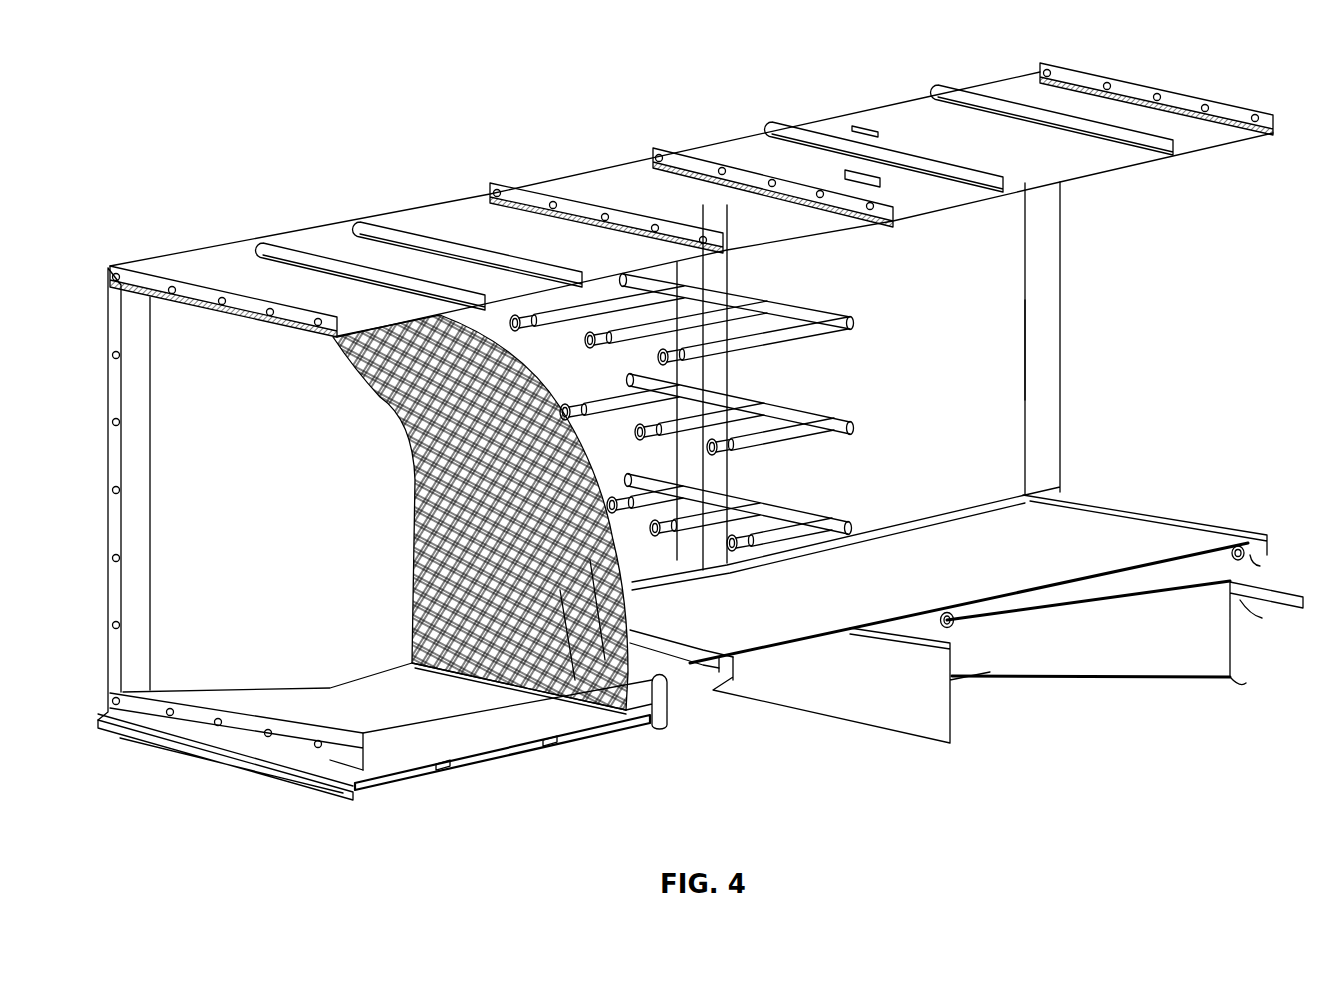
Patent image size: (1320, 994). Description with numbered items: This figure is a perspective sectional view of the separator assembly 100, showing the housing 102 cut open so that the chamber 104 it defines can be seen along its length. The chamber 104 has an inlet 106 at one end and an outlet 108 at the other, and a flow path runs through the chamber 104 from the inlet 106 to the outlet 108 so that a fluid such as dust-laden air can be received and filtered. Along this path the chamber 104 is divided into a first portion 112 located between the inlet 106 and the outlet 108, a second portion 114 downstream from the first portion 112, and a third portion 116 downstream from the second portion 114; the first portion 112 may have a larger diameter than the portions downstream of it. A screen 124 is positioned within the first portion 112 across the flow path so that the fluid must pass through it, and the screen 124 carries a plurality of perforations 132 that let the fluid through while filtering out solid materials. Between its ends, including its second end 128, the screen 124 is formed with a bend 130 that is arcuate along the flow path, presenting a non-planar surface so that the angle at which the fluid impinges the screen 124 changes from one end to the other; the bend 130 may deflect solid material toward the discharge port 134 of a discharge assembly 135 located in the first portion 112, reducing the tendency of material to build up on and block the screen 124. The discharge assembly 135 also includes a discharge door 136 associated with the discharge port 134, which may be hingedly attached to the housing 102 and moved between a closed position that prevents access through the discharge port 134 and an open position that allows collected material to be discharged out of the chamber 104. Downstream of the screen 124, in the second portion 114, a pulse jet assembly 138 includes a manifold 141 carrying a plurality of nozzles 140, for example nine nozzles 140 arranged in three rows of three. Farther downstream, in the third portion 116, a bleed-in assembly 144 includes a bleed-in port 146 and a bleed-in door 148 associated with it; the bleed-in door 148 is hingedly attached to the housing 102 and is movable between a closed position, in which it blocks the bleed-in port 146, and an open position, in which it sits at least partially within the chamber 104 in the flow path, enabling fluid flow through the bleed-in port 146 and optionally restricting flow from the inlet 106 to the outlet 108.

The separator assembly 100 is at (702, 125).
The housing 102 is at (594, 195).
The chamber 104 is at (1027, 252).
The inlet 106 is at (163, 705).
The outlet 108 is at (1215, 530).
The first portion 112 is at (160, 365).
The second portion 114 is at (735, 620).
The third portion 116 is at (1040, 333).
The screen 124 is at (470, 665).
The second end 128 is at (543, 697).
The bend 130 is at (450, 330).
The perforations 132 is at (585, 590).
The discharge port 134 is at (392, 778).
The discharge assembly 135 is at (292, 828).
The discharge door 136 is at (455, 770).
The pulse jet assembly 138 is at (862, 300).
The nozzle 140 is at (658, 353).
The manifold 141 is at (840, 425).
The bleed-in assembly 144 is at (1160, 704).
The bleed-in port 146 is at (960, 690).
The bleed-in door 148 is at (1135, 545).